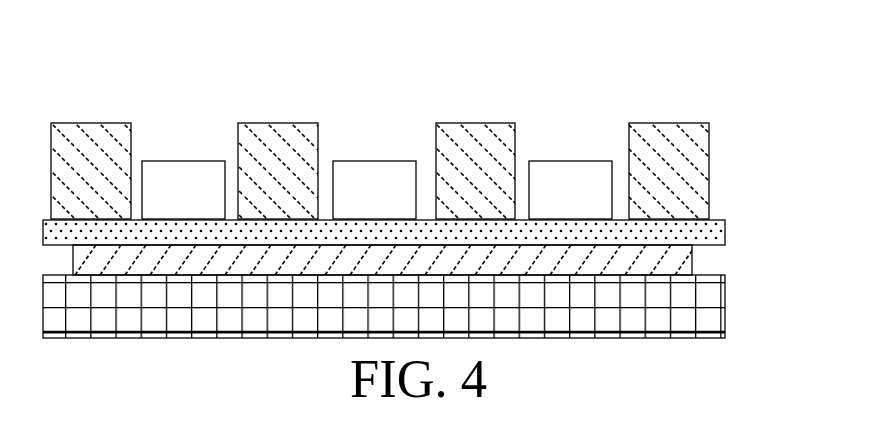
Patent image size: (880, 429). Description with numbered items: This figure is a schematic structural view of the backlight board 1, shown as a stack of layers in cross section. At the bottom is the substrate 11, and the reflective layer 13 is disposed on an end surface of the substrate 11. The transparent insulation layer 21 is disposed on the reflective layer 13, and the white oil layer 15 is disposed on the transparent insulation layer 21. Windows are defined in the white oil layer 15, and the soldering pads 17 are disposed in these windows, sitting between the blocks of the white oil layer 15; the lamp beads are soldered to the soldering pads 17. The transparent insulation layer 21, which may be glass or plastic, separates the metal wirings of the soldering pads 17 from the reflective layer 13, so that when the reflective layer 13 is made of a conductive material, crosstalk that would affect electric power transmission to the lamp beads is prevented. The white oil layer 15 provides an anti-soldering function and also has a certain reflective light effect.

The backlight board 1 is at (128, 76).
The substrate 11 is at (723, 298).
The reflective layer 13 is at (692, 266).
The white oil layer 15 is at (648, 123).
The soldering pads 17 is at (552, 164).
The transparent insulation layer 21 is at (715, 218).